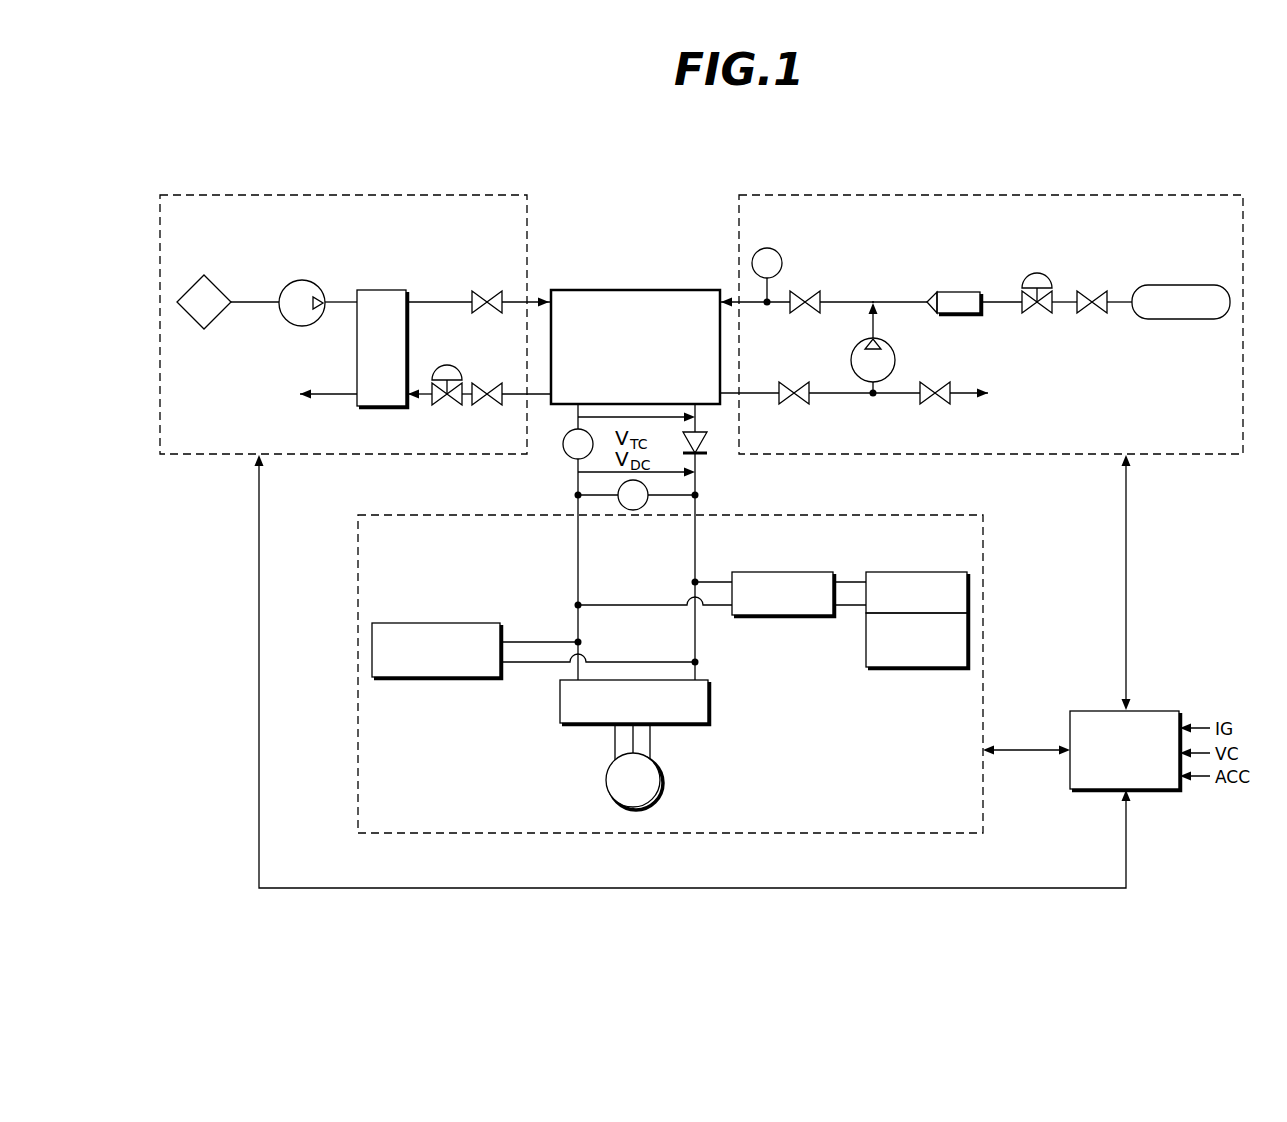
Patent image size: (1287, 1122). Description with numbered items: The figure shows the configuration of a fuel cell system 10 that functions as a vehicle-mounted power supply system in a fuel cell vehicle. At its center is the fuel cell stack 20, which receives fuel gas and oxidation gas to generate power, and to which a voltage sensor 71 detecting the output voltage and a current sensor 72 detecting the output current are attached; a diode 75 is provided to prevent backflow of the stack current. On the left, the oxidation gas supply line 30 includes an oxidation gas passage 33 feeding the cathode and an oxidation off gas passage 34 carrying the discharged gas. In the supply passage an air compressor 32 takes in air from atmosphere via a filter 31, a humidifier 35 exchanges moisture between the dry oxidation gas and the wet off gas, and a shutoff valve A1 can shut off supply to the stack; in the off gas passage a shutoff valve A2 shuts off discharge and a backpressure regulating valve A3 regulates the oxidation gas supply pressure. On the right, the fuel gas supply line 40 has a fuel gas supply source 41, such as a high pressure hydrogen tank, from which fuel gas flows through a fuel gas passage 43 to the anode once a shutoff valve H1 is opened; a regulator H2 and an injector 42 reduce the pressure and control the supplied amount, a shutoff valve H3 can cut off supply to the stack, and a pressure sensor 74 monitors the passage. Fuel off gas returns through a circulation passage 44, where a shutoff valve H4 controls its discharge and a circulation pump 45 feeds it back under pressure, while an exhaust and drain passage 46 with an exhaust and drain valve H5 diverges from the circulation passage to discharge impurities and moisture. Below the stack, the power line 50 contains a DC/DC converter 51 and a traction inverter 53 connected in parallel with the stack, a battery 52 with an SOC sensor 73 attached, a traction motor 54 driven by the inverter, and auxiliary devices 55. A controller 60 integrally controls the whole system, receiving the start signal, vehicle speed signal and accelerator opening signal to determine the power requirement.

The fuel cell system 10 is at (1225, 160).
The fuel cell stack 20 is at (637, 290).
The oxidation gas supply line 30 is at (305, 195).
The filter 31 is at (218, 286).
The air compressor 32 is at (301, 280).
The oxidation gas passage 33 is at (422, 302).
The oxidation off gas passage 34 is at (491, 388).
The humidifier 35 is at (385, 290).
The shutoff valve A1 is at (480, 297).
The shutoff valve A2 is at (482, 401).
The backpressure regulating valve A3 is at (450, 366).
The fuel gas supply line 40 is at (1072, 195).
The fuel gas supply source 41 is at (1178, 285).
The injector 42 is at (958, 292).
The fuel gas passage 43 is at (845, 302).
The circulation passage 44 is at (840, 395).
The circulation pump 45 is at (895, 360).
The exhaust and drain passage 46 is at (962, 393).
The shutoff valve H1 is at (1096, 296).
The regulator H2 is at (1036, 273).
The shutoff valve H3 is at (806, 296).
The shutoff valve H4 is at (795, 401).
The exhaust and drain valve H5 is at (933, 401).
The power line 50 is at (983, 585).
The DC/DC converter 51 is at (780, 572).
The battery 52 is at (897, 572).
The traction inverter 53 is at (709, 704).
The traction motor 54 is at (661, 781).
The auxiliary devices 55 is at (450, 623).
The controller 60 is at (1158, 711).
The voltage sensor 71 is at (632, 511).
The current sensor 72 is at (565, 455).
The SOC sensor 73 is at (888, 668).
The pressure sensor 74 is at (766, 248).
The diode 75 is at (706, 455).